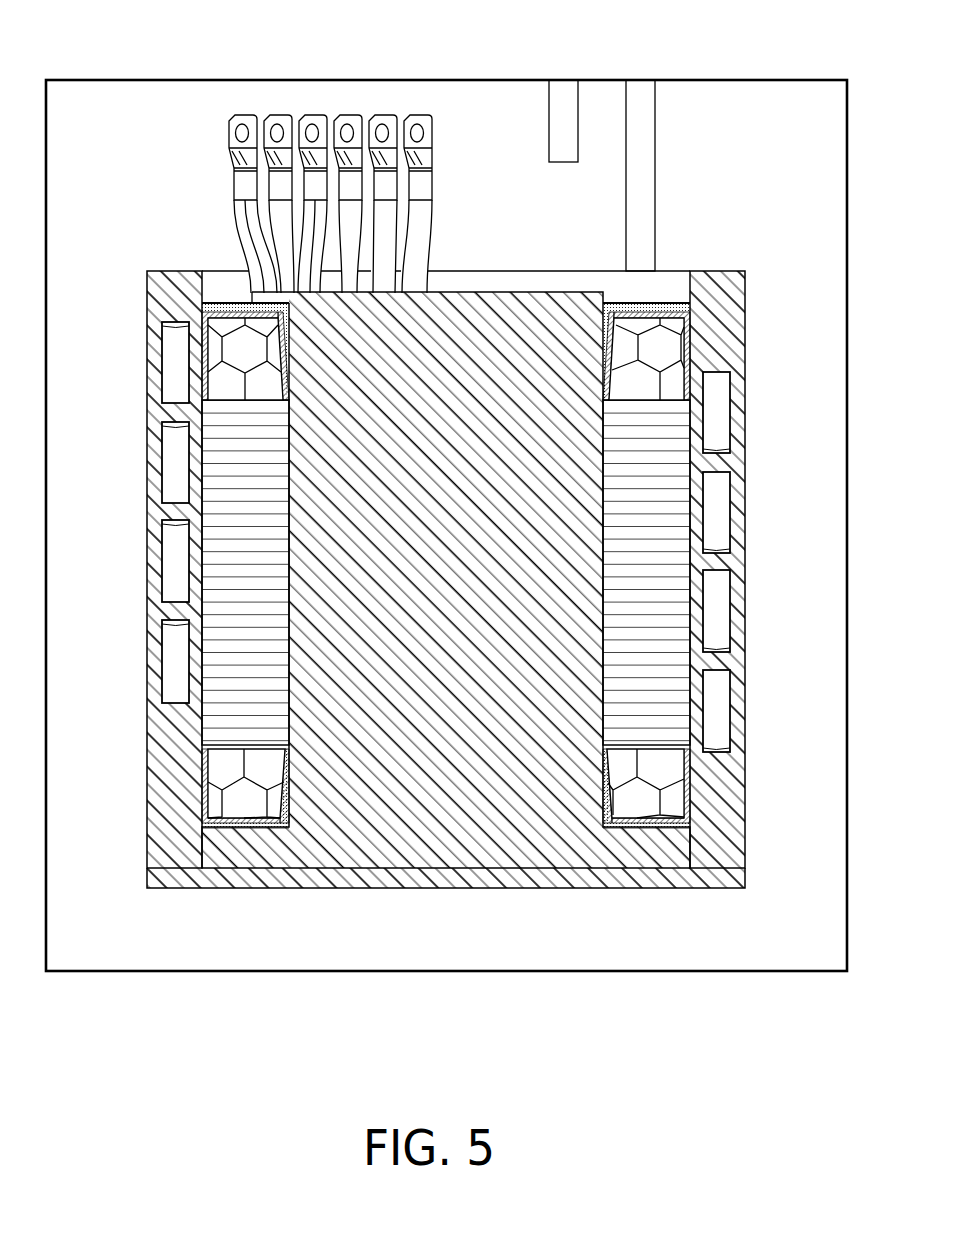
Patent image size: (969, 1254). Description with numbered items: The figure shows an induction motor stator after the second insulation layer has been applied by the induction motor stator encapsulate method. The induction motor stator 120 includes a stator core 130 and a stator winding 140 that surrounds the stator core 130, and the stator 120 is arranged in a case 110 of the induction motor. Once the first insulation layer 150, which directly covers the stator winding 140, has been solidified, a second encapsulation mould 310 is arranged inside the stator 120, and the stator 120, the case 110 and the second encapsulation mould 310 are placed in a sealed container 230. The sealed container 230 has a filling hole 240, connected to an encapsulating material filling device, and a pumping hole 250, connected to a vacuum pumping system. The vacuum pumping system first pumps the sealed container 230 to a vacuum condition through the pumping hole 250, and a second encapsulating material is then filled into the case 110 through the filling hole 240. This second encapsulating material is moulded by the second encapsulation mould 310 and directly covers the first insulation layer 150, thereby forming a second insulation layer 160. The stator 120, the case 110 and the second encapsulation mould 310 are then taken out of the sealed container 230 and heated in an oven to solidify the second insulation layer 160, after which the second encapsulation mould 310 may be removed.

The case 110 is at (722, 317).
The induction motor stator 120 is at (563, 712).
The stator core 130 is at (655, 520).
The stator winding 140 is at (662, 778).
The first insulation layer 150 is at (203, 795).
The second insulation layer 160 is at (260, 825).
The sealed container 230 is at (753, 80).
The filling hole 240 is at (647, 95).
The pumping hole 250 is at (571, 95).
The second encapsulation mould 310 is at (388, 563).